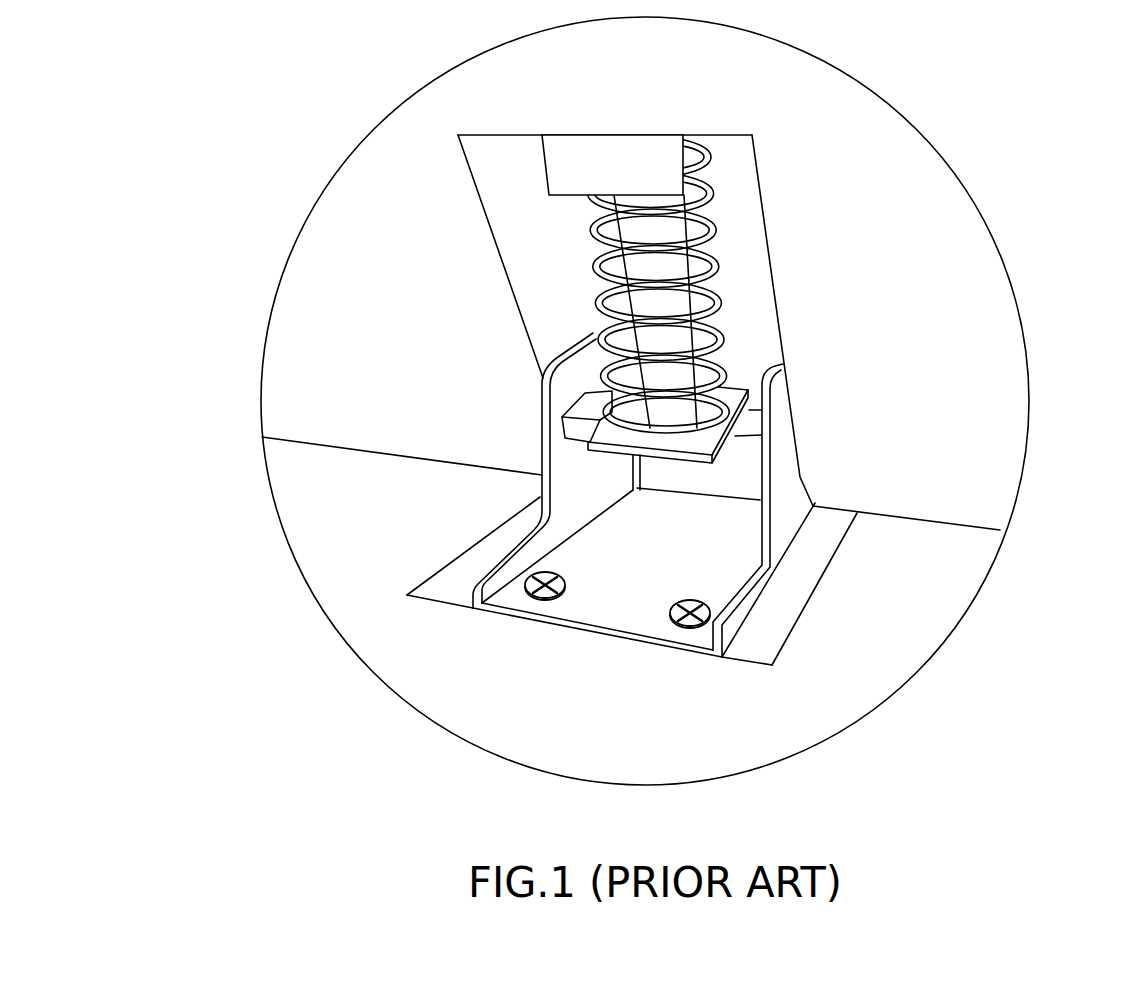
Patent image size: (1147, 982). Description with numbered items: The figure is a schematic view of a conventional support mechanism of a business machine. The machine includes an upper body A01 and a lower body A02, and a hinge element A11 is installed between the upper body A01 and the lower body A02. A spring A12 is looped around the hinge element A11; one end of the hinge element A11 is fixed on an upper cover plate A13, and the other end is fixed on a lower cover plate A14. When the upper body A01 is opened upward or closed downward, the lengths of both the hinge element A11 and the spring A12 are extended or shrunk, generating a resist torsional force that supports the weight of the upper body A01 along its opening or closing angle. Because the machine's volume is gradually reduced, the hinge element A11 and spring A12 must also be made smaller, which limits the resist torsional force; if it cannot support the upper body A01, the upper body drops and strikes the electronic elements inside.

The upper body A01 is at (845, 137).
The lower body A02 is at (853, 617).
The hinge element A11 is at (668, 273).
The spring A12 is at (667, 360).
The upper cover plate A13 is at (513, 178).
The lower cover plate A14 is at (690, 532).